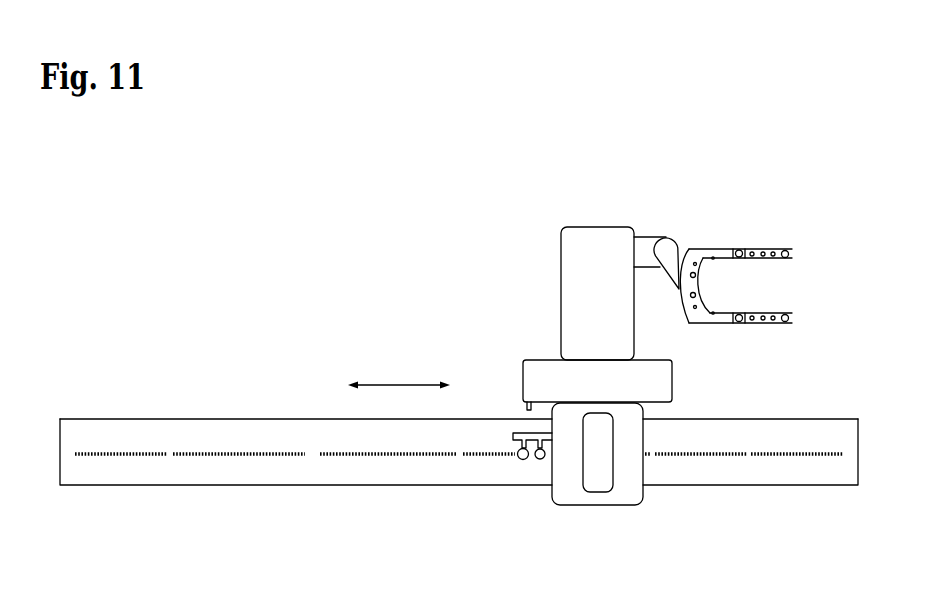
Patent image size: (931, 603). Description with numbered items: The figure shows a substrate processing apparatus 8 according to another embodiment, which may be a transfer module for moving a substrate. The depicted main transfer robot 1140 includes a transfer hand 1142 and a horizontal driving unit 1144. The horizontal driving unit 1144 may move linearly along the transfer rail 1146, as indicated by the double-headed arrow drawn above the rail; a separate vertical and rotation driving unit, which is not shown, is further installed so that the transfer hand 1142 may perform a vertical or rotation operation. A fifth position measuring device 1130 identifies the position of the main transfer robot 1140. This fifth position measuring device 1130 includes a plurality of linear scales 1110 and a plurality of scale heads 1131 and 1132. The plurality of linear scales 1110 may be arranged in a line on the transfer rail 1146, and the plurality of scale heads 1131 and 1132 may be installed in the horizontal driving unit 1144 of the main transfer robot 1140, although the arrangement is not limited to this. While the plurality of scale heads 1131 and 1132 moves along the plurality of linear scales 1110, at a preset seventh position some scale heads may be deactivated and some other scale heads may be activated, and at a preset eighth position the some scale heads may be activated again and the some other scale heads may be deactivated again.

The substrate processing apparatus 8 is at (472, 169).
The linear scales 1110 is at (459, 455).
The fifth position measuring device 1130 is at (515, 441).
The scale head 1131 is at (524, 461).
The scale head 1132 is at (540, 461).
The main transfer robot 1140 is at (657, 279).
The transfer hand 1142 is at (767, 248).
The horizontal driving unit 1144 is at (650, 516).
The transfer rail 1146 is at (802, 419).